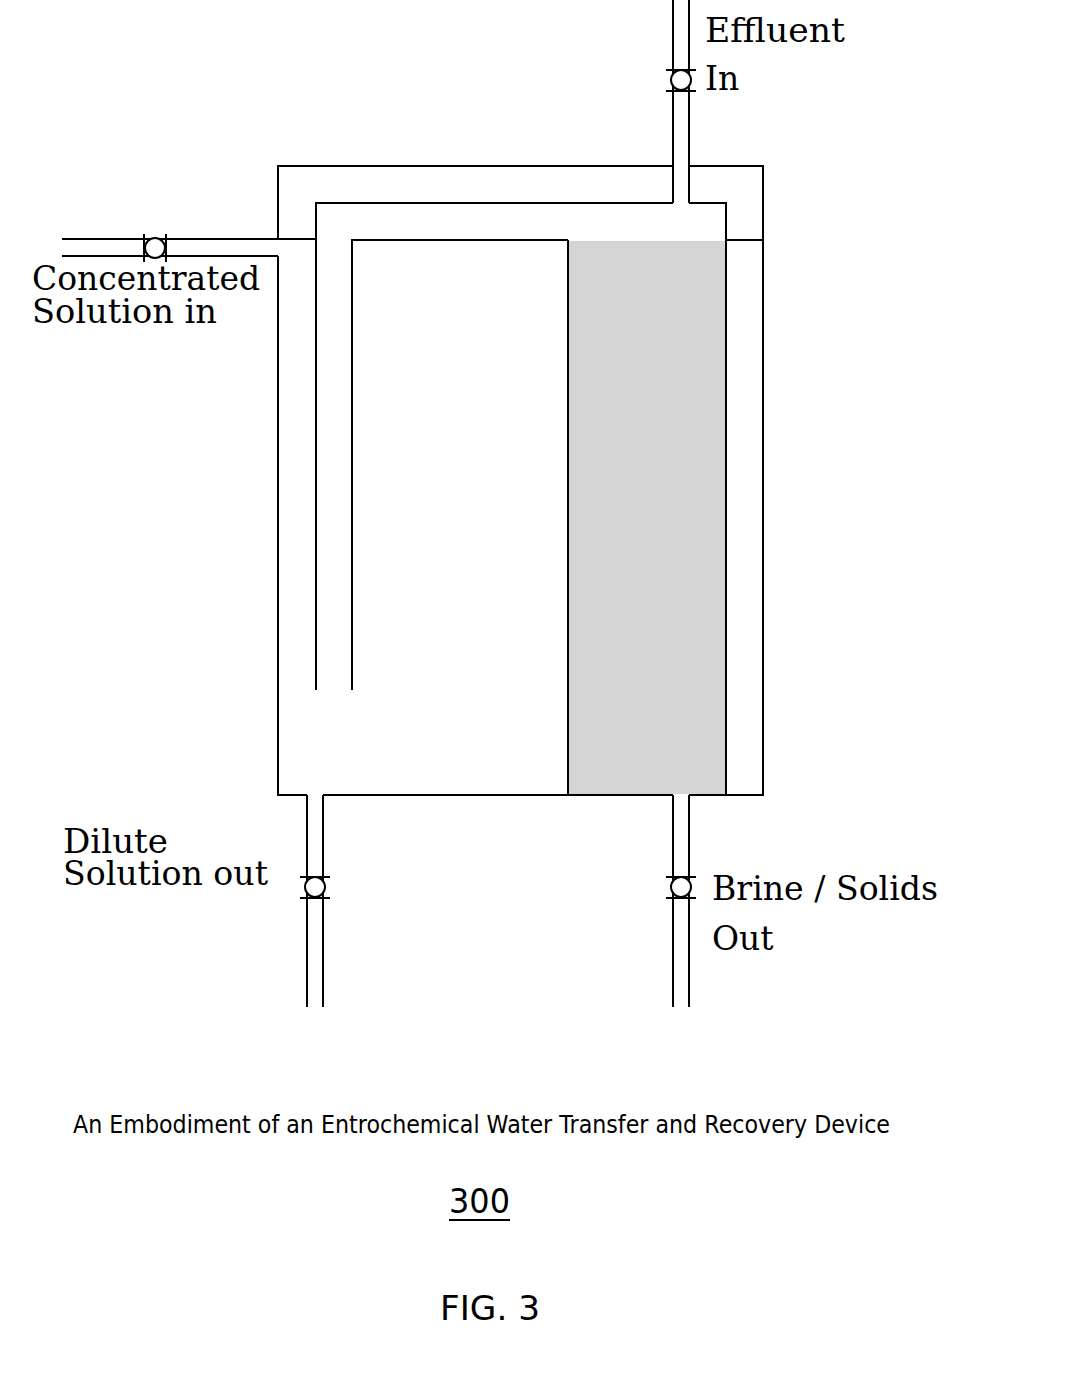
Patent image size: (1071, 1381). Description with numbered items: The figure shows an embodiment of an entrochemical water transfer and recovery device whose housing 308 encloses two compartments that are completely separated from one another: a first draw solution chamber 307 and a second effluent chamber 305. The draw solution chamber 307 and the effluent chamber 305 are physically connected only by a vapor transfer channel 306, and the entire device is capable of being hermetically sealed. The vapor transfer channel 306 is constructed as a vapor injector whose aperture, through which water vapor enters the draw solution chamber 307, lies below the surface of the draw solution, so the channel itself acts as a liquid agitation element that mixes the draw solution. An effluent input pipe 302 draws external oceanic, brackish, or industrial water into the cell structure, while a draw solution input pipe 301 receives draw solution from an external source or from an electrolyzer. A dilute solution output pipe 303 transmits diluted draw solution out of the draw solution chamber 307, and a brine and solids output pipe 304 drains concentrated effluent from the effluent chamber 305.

The draw solution input pipe 301 is at (189, 228).
The effluent input pipe 302 is at (645, 101).
The dilute solution output pipe 303 is at (345, 901).
The brine and/or solids output pipe 304 is at (645, 901).
The effluent chamber 305 is at (647, 517).
The vapor transfer channel 306 is at (333, 450).
The draw solution chamber 307 is at (502, 517).
The housing 308 is at (520, 480).